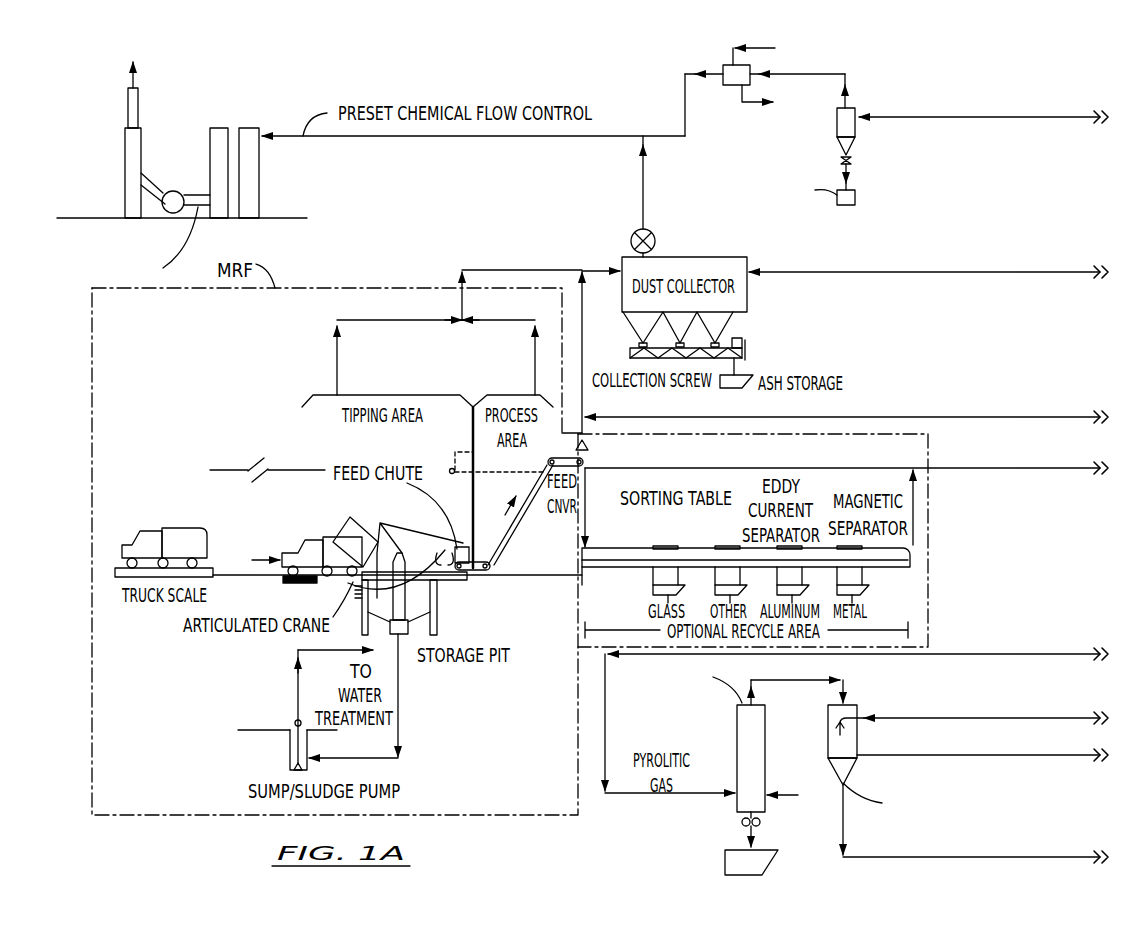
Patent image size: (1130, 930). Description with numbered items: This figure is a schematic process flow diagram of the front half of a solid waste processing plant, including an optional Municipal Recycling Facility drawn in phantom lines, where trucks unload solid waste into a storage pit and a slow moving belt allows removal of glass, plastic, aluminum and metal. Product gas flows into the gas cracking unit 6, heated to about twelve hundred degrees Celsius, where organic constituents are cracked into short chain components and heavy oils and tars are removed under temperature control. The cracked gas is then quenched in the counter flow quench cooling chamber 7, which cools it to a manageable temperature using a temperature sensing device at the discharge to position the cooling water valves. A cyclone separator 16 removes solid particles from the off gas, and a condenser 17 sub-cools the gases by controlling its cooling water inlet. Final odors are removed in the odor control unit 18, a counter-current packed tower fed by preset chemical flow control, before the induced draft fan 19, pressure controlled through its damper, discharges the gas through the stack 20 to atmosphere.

The stack 20 is at (128, 108).
The induced draft (ID) fan 19 is at (162, 210).
The odor control unit 18 is at (218, 212).
The condenser 17 is at (733, 78).
The cyclone separator 16 is at (852, 127).
The gas cracking unit 6 is at (752, 752).
The counter flow quench (cooling chamber) 7 is at (852, 748).